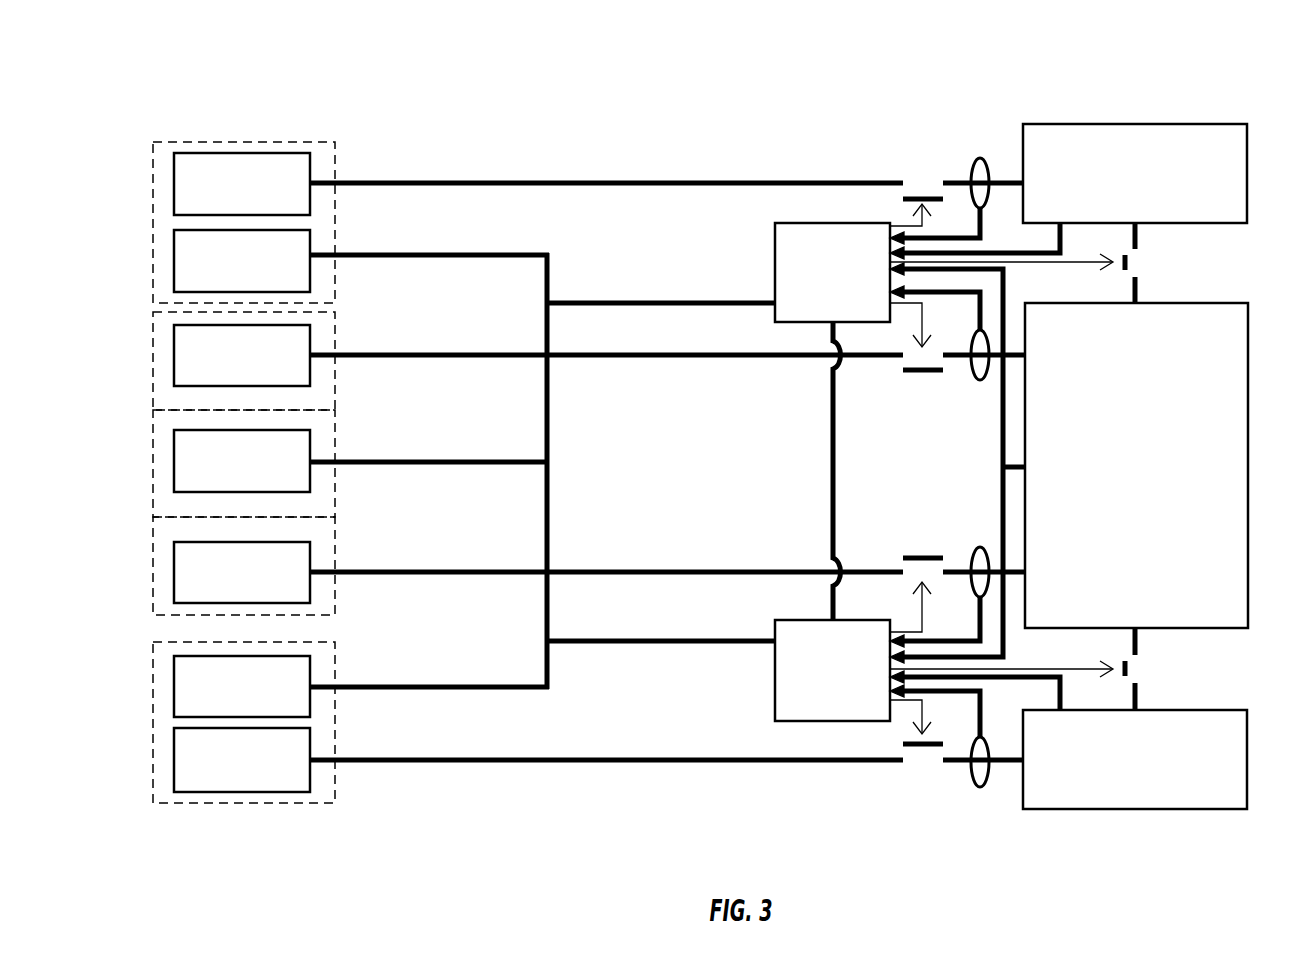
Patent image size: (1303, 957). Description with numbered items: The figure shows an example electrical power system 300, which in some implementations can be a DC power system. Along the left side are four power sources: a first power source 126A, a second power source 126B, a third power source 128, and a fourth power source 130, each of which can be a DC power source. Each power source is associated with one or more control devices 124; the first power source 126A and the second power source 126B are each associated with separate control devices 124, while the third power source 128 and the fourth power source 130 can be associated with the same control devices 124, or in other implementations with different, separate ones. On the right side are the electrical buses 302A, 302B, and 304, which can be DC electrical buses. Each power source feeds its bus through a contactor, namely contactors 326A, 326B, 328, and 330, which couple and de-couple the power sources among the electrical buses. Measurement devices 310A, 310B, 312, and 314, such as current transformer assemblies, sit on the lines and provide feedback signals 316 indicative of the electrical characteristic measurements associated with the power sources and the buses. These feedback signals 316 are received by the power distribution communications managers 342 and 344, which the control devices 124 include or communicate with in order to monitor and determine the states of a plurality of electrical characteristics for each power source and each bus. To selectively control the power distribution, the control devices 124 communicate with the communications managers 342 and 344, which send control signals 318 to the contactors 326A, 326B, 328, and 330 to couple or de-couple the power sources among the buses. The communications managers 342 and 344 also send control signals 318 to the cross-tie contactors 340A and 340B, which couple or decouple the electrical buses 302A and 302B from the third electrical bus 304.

The electrical power system 300 is at (388, 50).
The control device 124 is at (222, 273).
The first power source 126A is at (217, 196).
The second power source 126B is at (217, 772).
The third power source 128 is at (222, 368).
The fourth power source 130 is at (222, 585).
The electrical bus 302A is at (1110, 186).
The electrical bus 302B is at (1110, 772).
The third electrical bus 304 is at (1116, 477).
The measurement device 310A is at (980, 157).
The measurement device 310B is at (980, 788).
The measurement device 312 is at (980, 381).
The measurement device 314 is at (980, 546).
The feedback signal 316 is at (1042, 251).
The control signal 318 is at (906, 224).
The contactor 326A is at (931, 162).
The contactor 326B is at (920, 782).
The contactor 328 is at (921, 386).
The contactor 330 is at (919, 540).
The cross-tie contactor 340A is at (1155, 264).
The cross-tie contactor 340B is at (1155, 668).
The power distribution communications manager 342 is at (813, 285).
The power distribution communications manager 344 is at (813, 683).